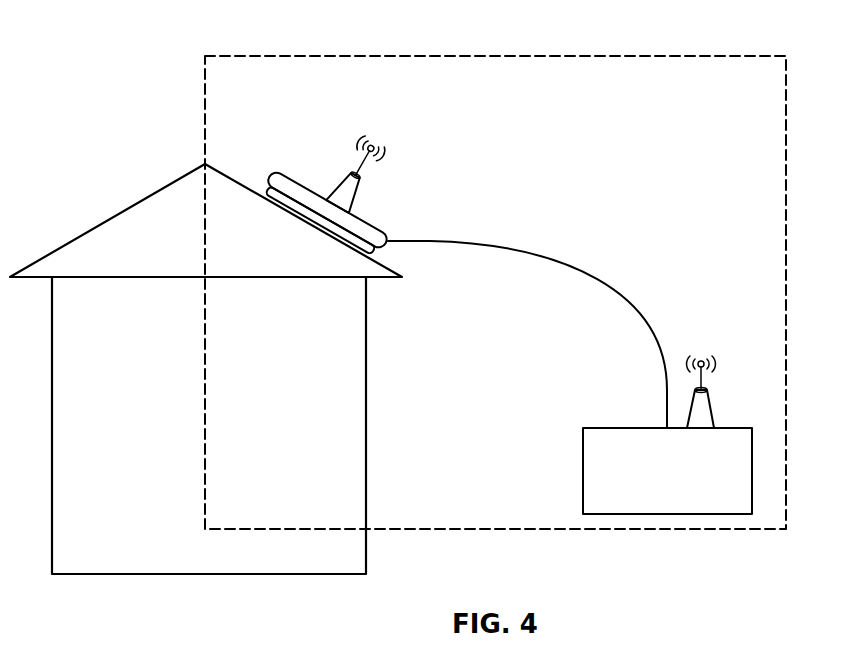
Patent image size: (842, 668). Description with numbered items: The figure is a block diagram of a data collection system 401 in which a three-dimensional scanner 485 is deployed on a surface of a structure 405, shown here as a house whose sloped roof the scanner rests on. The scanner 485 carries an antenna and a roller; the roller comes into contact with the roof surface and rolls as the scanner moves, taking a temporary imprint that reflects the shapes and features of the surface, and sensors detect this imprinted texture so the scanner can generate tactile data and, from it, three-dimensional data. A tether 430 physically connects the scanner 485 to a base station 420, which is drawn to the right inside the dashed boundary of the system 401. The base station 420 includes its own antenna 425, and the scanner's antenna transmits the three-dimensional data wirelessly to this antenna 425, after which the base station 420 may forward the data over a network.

The data collection system 401 is at (671, 56).
The structure 405 is at (135, 203).
The 3D scanner 485 is at (345, 168).
The tether 430 is at (625, 290).
The base station 420 is at (593, 428).
The antenna 425 is at (712, 408).